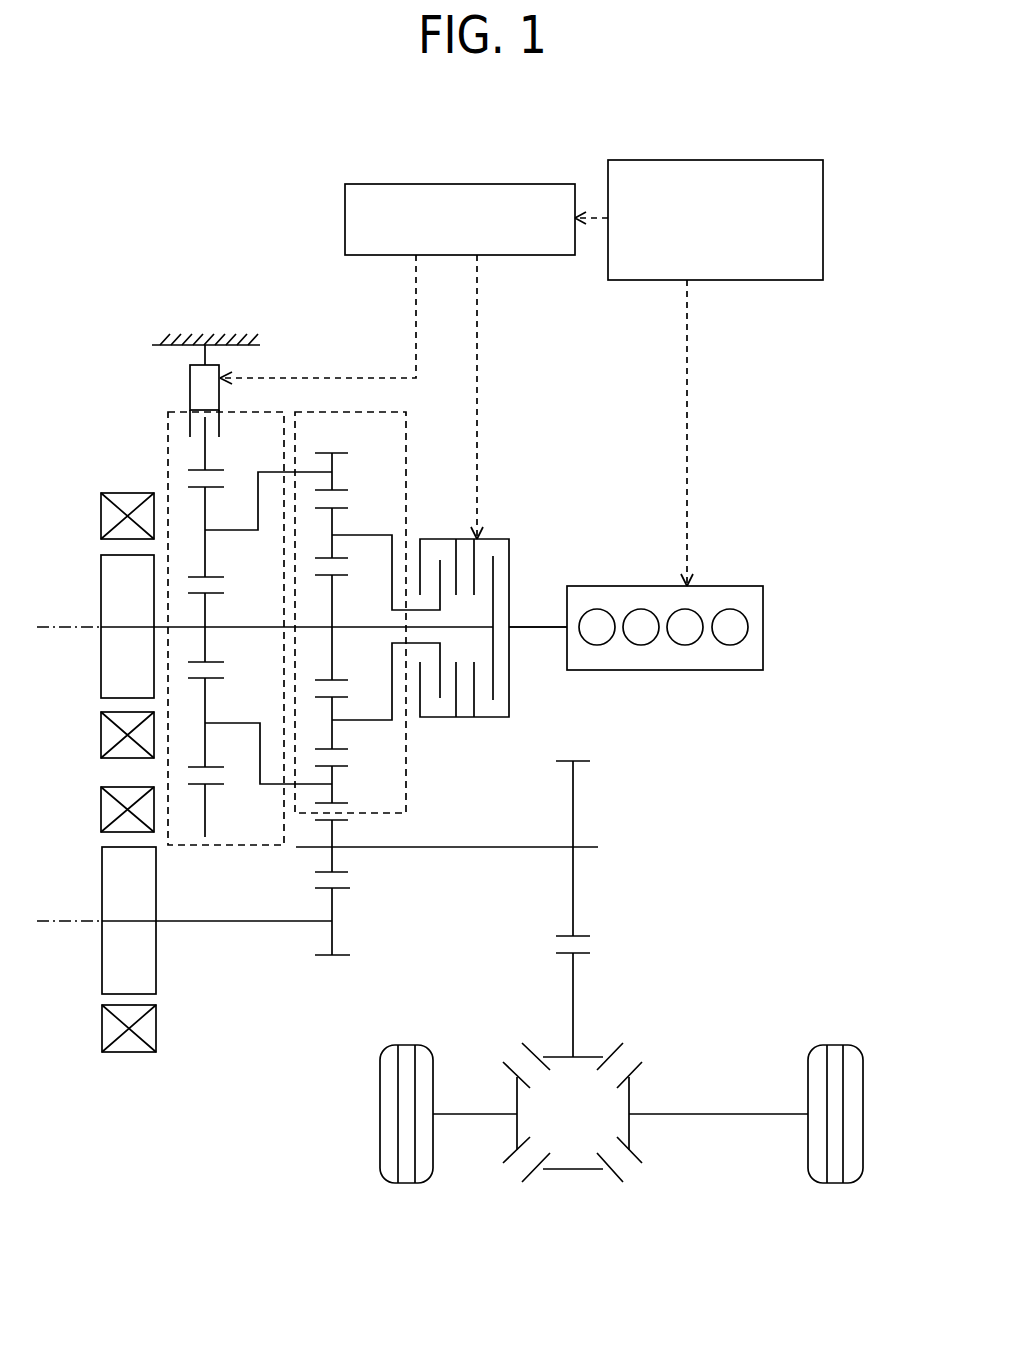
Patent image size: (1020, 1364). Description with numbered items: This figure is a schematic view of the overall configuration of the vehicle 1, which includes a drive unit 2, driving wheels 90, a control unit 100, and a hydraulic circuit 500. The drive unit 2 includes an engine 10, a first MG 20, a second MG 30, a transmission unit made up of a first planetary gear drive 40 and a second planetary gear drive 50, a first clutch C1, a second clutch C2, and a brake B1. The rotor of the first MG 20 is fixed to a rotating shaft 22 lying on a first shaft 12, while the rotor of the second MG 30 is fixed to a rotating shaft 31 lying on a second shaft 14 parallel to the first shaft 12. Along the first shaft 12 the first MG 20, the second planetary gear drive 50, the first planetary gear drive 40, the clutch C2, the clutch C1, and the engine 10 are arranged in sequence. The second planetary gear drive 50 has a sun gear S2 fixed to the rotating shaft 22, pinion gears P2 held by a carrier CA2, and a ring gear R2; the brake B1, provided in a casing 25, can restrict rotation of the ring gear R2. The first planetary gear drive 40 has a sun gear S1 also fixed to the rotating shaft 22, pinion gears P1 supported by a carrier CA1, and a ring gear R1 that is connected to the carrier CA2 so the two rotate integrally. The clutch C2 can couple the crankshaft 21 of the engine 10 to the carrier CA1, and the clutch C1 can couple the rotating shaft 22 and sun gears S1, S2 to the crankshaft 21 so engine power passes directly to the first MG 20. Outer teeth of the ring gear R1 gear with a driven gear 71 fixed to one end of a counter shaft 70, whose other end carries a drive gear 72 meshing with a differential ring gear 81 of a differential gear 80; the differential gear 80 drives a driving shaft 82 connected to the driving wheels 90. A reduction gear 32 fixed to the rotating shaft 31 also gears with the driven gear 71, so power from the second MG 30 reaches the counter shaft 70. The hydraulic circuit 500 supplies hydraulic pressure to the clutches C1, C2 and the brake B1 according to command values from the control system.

The vehicle 1 is at (331, 166).
The drive unit 2 is at (211, 220).
The engine 10 is at (641, 585).
The first shaft 12 is at (42, 625).
The second shaft 14 is at (40, 918).
The first MG 20 is at (100, 683).
The crankshaft 21 is at (533, 623).
The rotating shaft 22 is at (254, 630).
The casing 25 is at (250, 345).
The second MG 30 is at (102, 963).
The rotating shaft 31 is at (218, 920).
The reduction gear 32 is at (345, 957).
The first planetary gear drive 40 is at (355, 413).
The second planetary gear drive 50 is at (168, 453).
The counter shaft 70 is at (466, 845).
The driven gear 71 is at (336, 852).
The drive gear 72 is at (577, 758).
The differential gear 80 is at (593, 1053).
The differential ring gear 81 is at (577, 982).
The driving shaft 82 is at (475, 1112).
The driving wheels 90 is at (410, 1044).
The control unit 100 is at (695, 160).
The hydraulic circuit 500 is at (452, 184).
The brake B1 is at (190, 380).
The first clutch C1 is at (500, 536).
The second clutch C2 is at (436, 538).
The ring gear R1 is at (335, 470).
The carrier CA1 is at (372, 535).
The sun gear S1 is at (335, 614).
The pinion gears P1 is at (335, 738).
The ring gear R2 is at (208, 456).
The pinion gears P2 is at (210, 565).
The sun gear S2 is at (210, 612).
The carrier CA2 is at (270, 788).